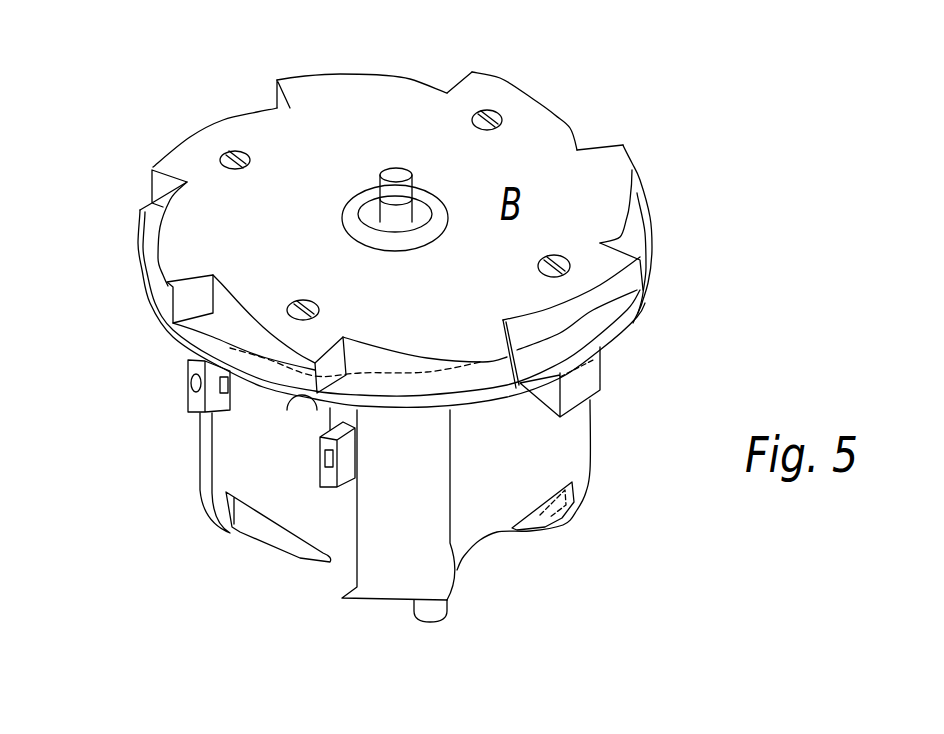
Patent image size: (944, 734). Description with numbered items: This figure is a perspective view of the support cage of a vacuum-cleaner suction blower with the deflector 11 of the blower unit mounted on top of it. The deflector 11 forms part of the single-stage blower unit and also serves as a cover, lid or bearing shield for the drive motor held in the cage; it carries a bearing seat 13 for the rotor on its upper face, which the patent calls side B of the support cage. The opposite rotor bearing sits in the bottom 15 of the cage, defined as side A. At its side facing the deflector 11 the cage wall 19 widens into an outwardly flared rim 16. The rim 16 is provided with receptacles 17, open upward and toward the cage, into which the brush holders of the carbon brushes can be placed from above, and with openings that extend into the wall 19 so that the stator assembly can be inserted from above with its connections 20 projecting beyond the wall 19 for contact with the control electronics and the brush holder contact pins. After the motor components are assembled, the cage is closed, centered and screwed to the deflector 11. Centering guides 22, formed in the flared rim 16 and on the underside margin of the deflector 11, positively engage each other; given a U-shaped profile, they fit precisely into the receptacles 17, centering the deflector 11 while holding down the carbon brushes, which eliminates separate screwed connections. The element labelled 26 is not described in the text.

The deflector 11 is at (527, 143).
The bearing seat 13 is at (367, 188).
The bottom 15 is at (257, 527).
The flared rim 16 is at (645, 217).
The receptacles 17 is at (580, 393).
The wall 19 is at (235, 475).
The connections 20 is at (188, 407).
The centering guides 22 is at (600, 350).
The screw 26 is at (222, 156).